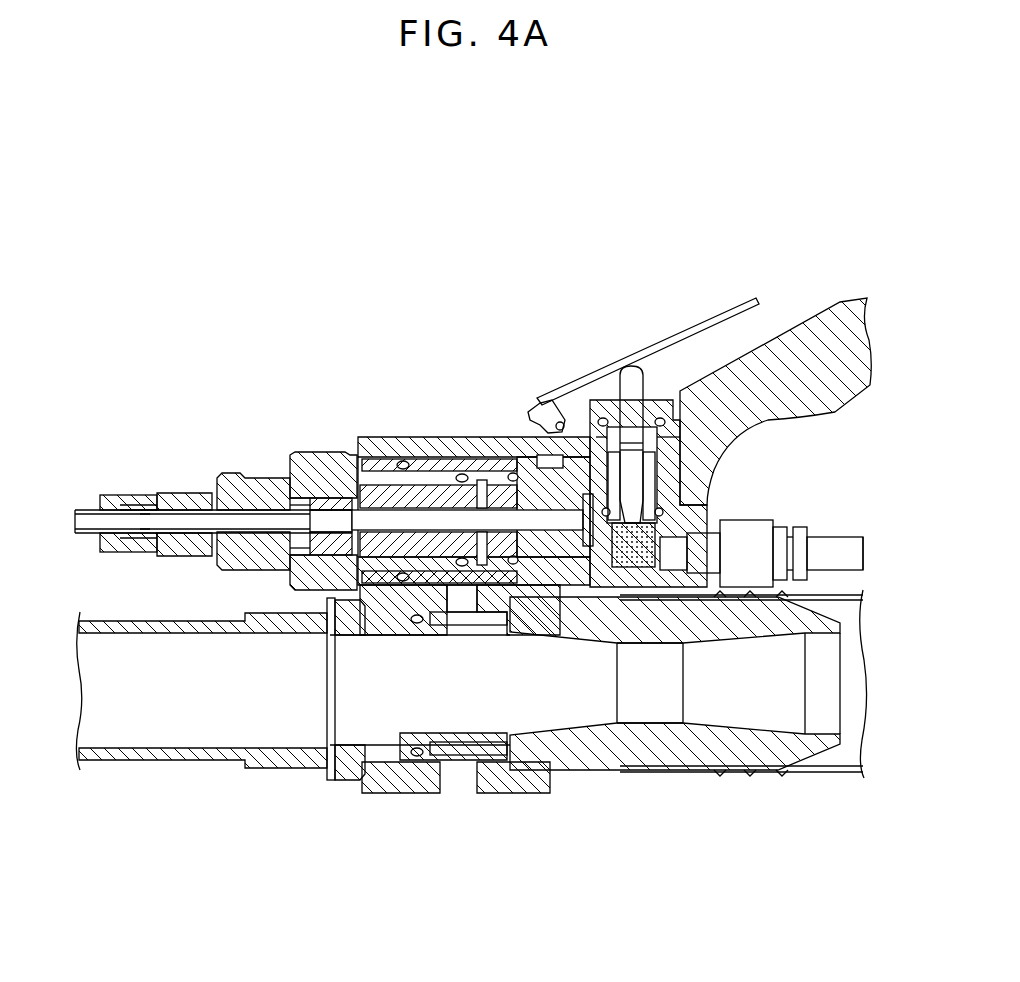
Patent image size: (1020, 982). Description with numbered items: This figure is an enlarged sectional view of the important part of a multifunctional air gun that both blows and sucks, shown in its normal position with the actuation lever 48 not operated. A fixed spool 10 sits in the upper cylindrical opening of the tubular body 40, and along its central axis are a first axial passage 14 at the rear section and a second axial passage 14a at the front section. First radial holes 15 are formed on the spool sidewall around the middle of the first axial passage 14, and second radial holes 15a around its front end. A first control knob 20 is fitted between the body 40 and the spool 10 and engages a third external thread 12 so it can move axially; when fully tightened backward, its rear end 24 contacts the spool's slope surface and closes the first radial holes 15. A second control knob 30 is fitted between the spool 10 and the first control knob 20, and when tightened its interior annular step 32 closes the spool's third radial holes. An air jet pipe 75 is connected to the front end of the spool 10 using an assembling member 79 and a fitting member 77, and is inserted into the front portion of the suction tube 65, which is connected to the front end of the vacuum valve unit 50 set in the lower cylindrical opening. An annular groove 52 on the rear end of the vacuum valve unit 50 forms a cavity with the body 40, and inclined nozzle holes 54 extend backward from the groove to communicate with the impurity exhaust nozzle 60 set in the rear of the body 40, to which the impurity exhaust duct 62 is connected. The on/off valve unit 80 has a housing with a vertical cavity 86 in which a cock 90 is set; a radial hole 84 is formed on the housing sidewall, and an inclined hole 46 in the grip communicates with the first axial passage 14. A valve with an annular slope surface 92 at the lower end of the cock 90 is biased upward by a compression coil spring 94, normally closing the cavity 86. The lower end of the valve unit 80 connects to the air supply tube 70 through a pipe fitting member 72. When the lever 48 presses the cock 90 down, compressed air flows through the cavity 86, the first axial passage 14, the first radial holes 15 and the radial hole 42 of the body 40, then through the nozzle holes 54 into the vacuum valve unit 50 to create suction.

The fixed spool 10 is at (420, 470).
The third external thread 12 is at (446, 488).
The first axial passage 14 is at (388, 590).
The second axial passage 14a is at (210, 526).
The first radial holes 15 is at (487, 531).
The second radial holes 15a is at (298, 560).
The first control knob 20 is at (316, 455).
The rear end of the first control knob 24 is at (504, 470).
The second control knob 30 is at (226, 476).
The interior annular step 32 is at (346, 492).
The tubular body 40 is at (415, 782).
The radial hole of the tubular body 42 is at (470, 596).
The inclined hole 46 is at (560, 487).
The actuation lever 48 is at (722, 318).
The vacuum valve unit 50 is at (340, 775).
The annular groove 52 is at (455, 628).
The nozzle holes 54 is at (495, 630).
The impurity exhaust nozzle 60 is at (647, 772).
The impurity exhaust duct 62 is at (833, 774).
The suction tube 65 is at (186, 752).
The air supply tube 70 is at (850, 540).
The pipe fitting member 72 is at (770, 522).
The air jet pipe 75 is at (88, 520).
The fitting member 77 is at (120, 495).
The assembling member 79 is at (173, 498).
The on/off valve unit 80 is at (664, 400).
The radial hole 84 is at (612, 470).
The vertical cavity 86 is at (672, 476).
The cock 90 is at (630, 364).
The annular slope surface 92 is at (660, 505).
The compression coil spring 94 is at (612, 603).